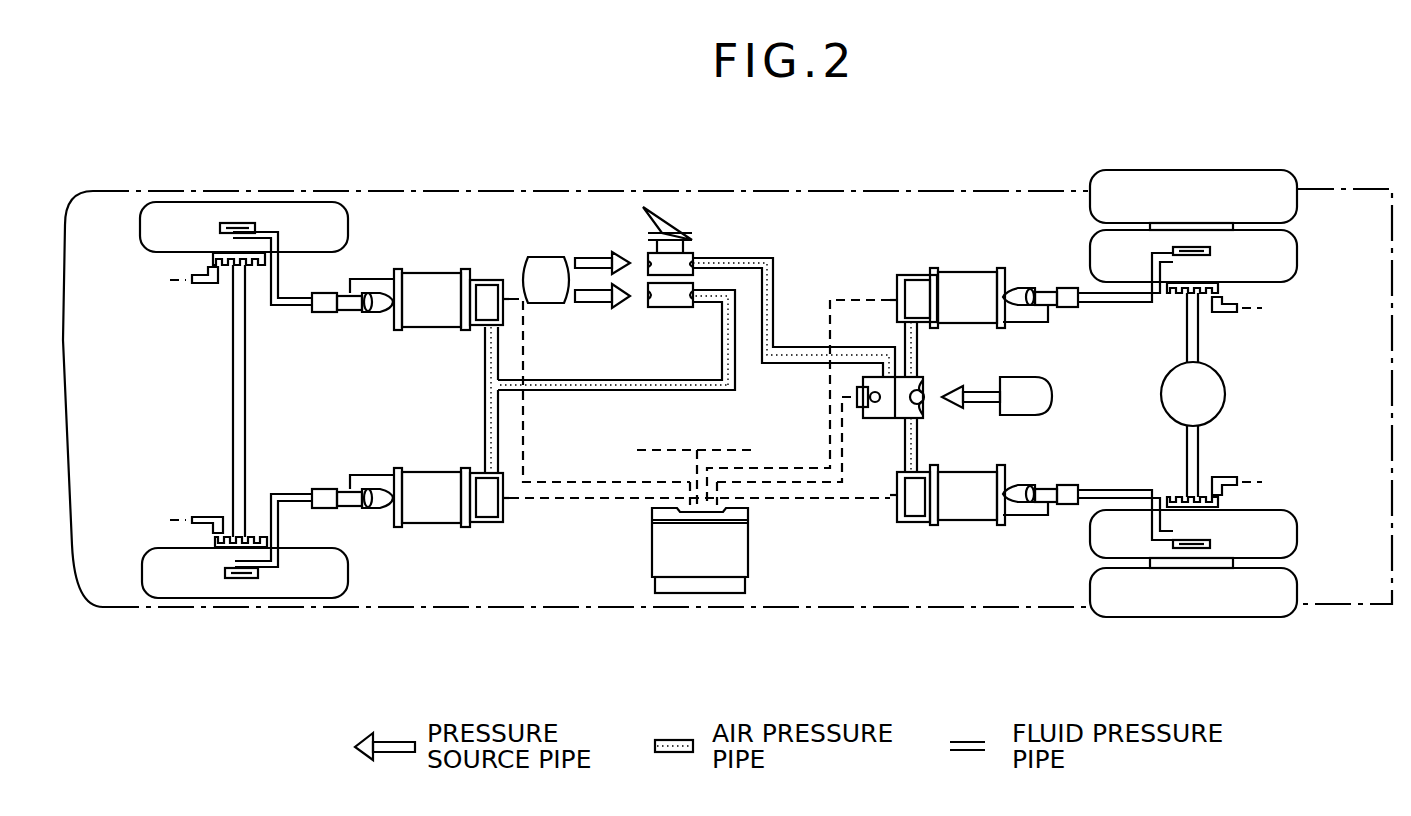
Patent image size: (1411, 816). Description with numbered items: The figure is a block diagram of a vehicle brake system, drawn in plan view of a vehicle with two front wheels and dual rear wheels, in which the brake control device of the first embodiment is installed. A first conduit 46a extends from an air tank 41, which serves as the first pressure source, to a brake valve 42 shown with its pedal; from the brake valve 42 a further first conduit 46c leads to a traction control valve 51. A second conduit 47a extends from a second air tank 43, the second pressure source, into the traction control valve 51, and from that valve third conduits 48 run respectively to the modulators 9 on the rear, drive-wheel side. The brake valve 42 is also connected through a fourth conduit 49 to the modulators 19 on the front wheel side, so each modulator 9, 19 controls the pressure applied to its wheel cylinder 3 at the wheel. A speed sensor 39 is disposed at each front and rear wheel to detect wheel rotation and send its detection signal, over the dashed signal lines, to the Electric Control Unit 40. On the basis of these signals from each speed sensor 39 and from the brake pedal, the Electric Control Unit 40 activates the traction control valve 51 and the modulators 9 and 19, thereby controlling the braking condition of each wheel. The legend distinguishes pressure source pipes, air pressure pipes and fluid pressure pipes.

The wheel cylinder 3 is at (237, 226).
The speed sensor 39 is at (198, 268).
The modulator (front wheel side) 19 is at (418, 259).
The modulator (rear wheel side) 9 is at (972, 265).
The Electric Control Unit 40 is at (685, 555).
The air tank (first pressure source) 41 is at (545, 262).
The brake valve 42 is at (667, 297).
The air tank (second pressure source) 43 is at (1025, 383).
The first conduit 46a is at (596, 258).
The first conduit 46c is at (775, 288).
The second conduit 47a is at (985, 403).
The third conduits 48 is at (917, 345).
The fourth conduit 49 is at (590, 393).
The traction control valve 51 is at (890, 412).